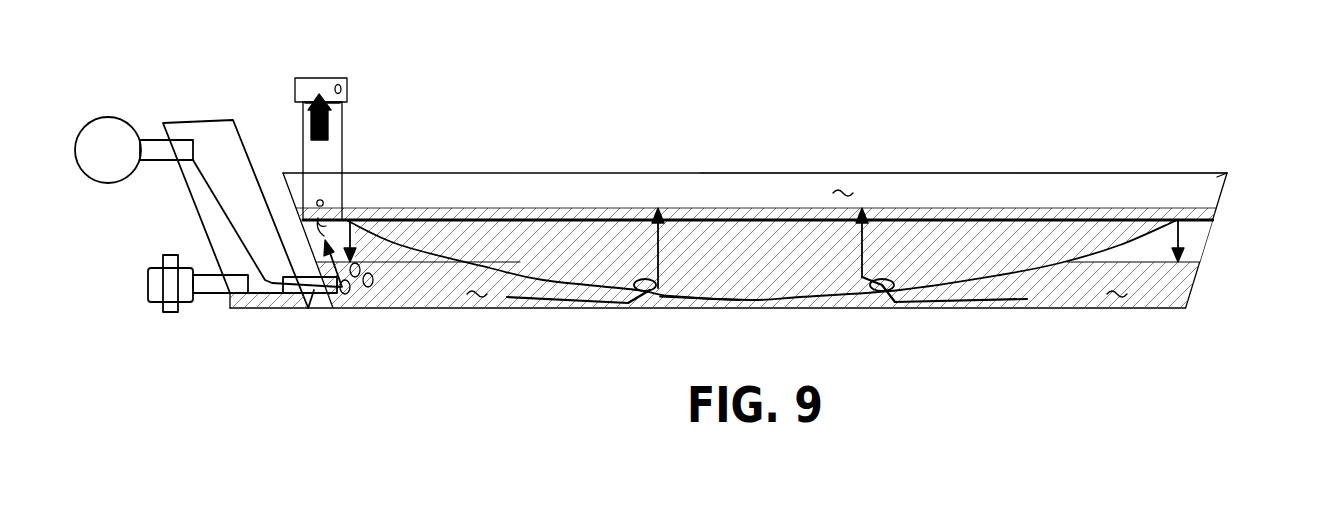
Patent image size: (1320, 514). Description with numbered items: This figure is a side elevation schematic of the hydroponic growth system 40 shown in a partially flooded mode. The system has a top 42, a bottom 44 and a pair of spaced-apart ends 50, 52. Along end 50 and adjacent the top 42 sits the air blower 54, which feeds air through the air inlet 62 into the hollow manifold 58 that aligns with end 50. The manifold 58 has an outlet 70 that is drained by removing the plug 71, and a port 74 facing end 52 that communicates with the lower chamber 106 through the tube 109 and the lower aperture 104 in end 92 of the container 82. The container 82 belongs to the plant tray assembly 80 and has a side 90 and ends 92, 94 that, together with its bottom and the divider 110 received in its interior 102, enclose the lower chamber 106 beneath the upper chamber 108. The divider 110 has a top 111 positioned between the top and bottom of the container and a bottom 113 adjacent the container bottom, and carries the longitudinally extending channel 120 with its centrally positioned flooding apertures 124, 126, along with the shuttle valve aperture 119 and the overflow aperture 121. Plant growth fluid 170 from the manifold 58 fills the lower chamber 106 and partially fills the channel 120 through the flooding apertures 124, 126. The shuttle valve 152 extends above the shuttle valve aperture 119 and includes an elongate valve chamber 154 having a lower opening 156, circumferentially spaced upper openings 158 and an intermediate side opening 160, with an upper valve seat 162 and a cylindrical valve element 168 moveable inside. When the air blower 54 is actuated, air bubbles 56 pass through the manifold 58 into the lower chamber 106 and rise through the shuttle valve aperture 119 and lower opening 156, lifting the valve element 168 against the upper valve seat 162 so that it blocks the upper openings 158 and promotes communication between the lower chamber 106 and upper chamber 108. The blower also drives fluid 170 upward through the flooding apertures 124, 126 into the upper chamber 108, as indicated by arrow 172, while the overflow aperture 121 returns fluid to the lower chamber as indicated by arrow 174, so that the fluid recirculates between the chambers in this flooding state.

The hydroponic growth system 40 is at (1234, 113).
The top 42 is at (526, 106).
The bottom 44 is at (956, 337).
The end 50 is at (103, 225).
The end 52 is at (1246, 246).
The air blower 54 is at (92, 120).
The air bubbles 56 is at (375, 281).
The hollow manifold 58 is at (213, 120).
The air inlet 62 is at (165, 140).
The outlet 70 is at (227, 300).
The plug 71 is at (157, 302).
The port 74 is at (308, 308).
The plant tray assembly 80 is at (1244, 164).
The container 82 is at (1150, 172).
The side 90 is at (718, 204).
The end 92 is at (287, 186).
The end 94 is at (1197, 280).
The interior 102 is at (1000, 192).
The lower aperture 104 is at (333, 298).
The lower chamber 106 is at (1117, 300).
The upper chamber 108 is at (845, 188).
The tube 109 is at (312, 282).
The divider 110 is at (1052, 278).
The top of divider 111 is at (572, 218).
The bottom of divider 113 is at (740, 302).
The shuttle valve aperture 119 is at (318, 233).
The channel 120 is at (750, 278).
The overflow aperture 121 is at (1200, 212).
The flooding aperture 124 is at (641, 292).
The flooding aperture 126 is at (882, 293).
The shuttle valve 152 is at (356, 56).
The valve chamber 154 is at (302, 110).
The lower opening 156 is at (353, 230).
The upper openings 158 is at (343, 89).
The intermediate side opening 160 is at (323, 202).
The upper valve seat 162 is at (307, 103).
The valve element 168 is at (307, 128).
The plant growth fluid 170 is at (477, 300).
The arrow 172 is at (657, 247).
The arrow 174 is at (1180, 240).